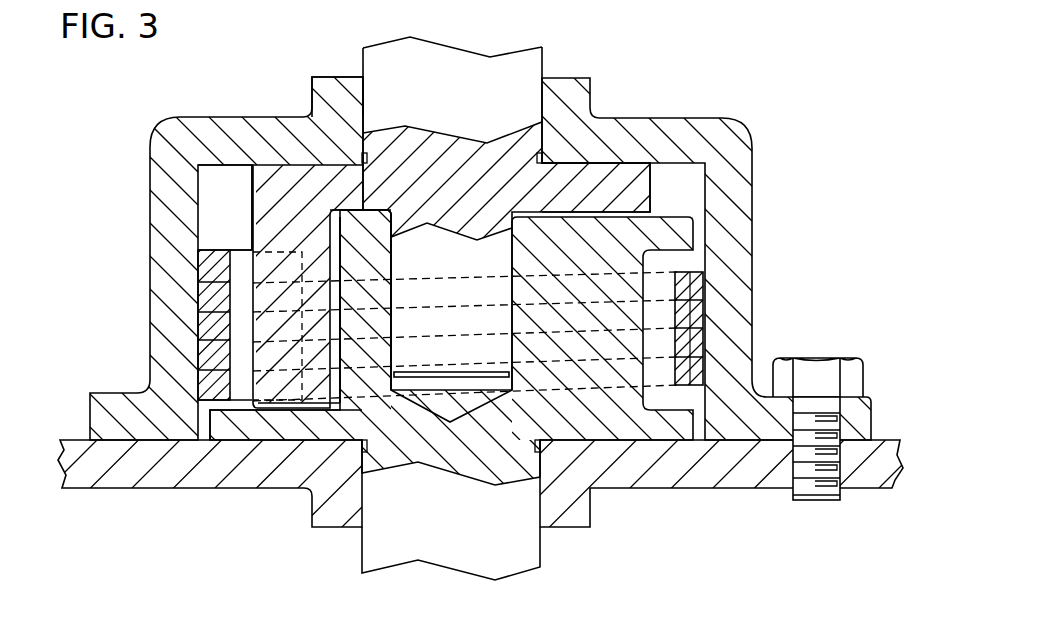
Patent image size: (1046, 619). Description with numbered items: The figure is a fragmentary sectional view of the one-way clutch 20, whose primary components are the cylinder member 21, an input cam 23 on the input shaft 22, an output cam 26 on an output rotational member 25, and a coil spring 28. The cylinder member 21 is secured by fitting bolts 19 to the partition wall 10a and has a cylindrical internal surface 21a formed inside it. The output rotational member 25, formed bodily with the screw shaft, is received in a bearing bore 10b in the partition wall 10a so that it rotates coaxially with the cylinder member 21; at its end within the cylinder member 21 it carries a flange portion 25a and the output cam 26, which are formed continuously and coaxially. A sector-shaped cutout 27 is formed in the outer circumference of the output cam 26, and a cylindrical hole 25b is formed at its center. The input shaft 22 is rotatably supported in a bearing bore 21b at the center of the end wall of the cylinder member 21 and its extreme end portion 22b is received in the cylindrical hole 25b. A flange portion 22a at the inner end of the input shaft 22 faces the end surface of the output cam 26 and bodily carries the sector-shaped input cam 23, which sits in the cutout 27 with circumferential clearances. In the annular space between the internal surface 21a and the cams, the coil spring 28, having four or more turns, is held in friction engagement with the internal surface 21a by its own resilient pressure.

The partition wall 10a is at (150, 480).
The bearing bore 10b is at (540, 507).
The fitting bolt 19 is at (818, 372).
The one-way clutch 20 is at (473, 226).
The cylinder member 21 is at (473, 232).
The internal surface 21a is at (198, 242).
The bearing bore 21b is at (366, 102).
The input shaft 22 is at (529, 265).
The flange portion 22a is at (597, 178).
The extreme end portion 22b is at (482, 350).
The input cam 23 is at (270, 297).
The output rotational member 25 is at (442, 329).
The flange portion 25a is at (263, 432).
The cylindrical hole 25b is at (392, 262).
The output cam 26 is at (677, 293).
The cutout 27 is at (340, 247).
The coil spring 28 is at (697, 345).